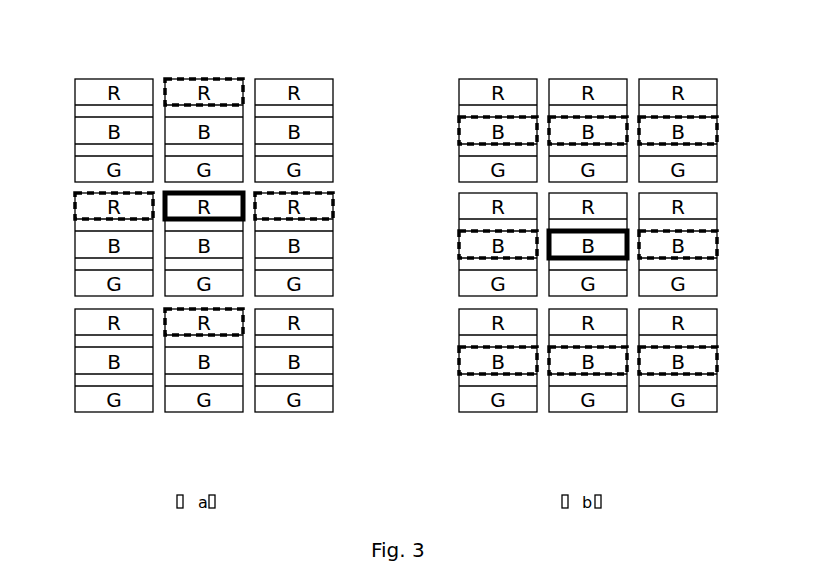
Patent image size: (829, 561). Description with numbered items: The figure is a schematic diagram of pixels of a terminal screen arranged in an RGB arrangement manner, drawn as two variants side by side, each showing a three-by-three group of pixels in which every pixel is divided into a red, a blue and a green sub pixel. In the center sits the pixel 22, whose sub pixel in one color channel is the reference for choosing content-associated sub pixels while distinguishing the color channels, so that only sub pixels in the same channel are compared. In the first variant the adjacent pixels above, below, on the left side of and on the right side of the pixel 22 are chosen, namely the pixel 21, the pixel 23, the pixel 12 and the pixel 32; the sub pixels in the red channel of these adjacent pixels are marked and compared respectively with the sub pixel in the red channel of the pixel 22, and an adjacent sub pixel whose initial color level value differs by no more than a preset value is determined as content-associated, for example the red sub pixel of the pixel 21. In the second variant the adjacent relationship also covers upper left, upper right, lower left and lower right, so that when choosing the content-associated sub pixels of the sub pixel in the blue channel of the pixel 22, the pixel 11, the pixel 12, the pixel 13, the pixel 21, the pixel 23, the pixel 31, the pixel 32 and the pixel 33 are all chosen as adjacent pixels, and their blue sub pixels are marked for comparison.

The pixel 11 is at (115, 79).
The pixel 21 is at (203, 79).
The pixel 31 is at (293, 79).
The pixel 12 is at (75, 245).
The pixel 22 is at (245, 252).
The pixel 32 is at (333, 207).
The pixel 13 is at (115, 412).
The pixel 23 is at (203, 412).
The pixel 33 is at (293, 412).